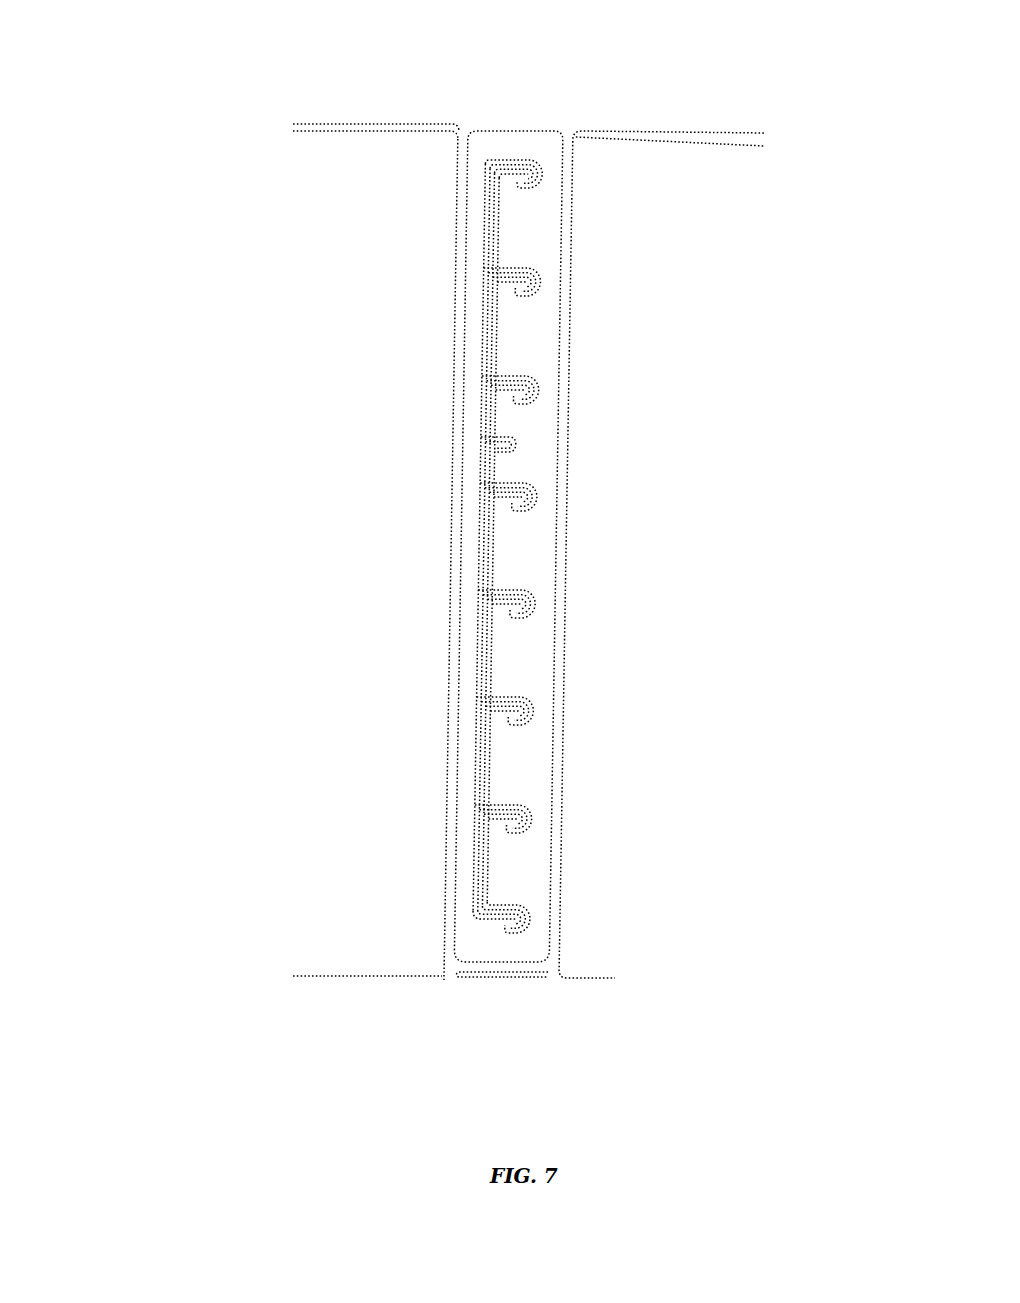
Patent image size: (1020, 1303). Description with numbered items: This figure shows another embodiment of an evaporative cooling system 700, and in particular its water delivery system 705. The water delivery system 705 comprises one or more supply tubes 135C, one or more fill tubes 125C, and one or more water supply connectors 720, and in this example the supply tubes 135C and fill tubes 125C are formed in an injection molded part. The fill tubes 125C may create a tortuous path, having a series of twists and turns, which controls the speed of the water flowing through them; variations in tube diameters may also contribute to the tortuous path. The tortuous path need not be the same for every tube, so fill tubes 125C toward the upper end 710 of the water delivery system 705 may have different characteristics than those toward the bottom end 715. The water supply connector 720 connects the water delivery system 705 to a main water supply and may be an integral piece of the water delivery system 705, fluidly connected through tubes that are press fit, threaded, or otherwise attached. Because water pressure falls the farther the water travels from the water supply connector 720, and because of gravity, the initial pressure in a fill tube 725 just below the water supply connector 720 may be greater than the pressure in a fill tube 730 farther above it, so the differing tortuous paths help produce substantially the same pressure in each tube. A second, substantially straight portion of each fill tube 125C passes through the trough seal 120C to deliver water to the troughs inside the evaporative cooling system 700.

The evaporative cooling system 700 is at (150, 90).
The water delivery system 705 is at (612, 313).
The upper end 710 is at (352, 188).
The bottom end 715 is at (388, 917).
The water supply connector 720 is at (487, 432).
The fill tube 725 is at (552, 502).
The fill tube 730 is at (496, 147).
The trough seal 120C is at (562, 130).
The fill tube 125C is at (511, 580).
The supply tube 135C is at (483, 322).